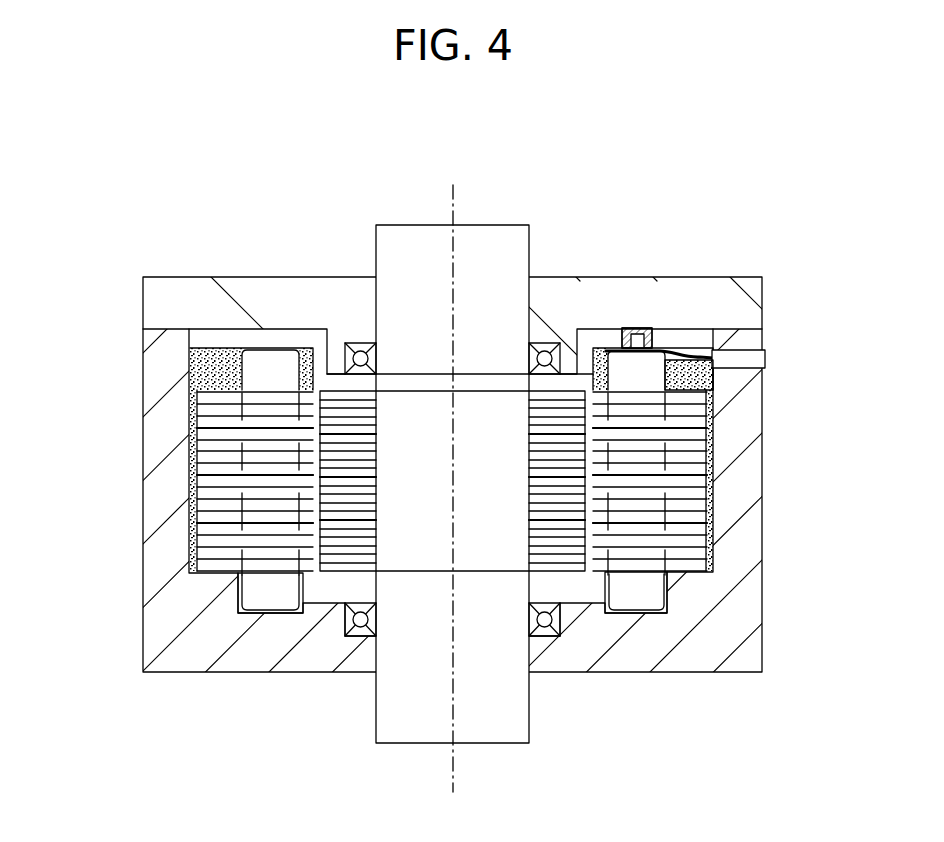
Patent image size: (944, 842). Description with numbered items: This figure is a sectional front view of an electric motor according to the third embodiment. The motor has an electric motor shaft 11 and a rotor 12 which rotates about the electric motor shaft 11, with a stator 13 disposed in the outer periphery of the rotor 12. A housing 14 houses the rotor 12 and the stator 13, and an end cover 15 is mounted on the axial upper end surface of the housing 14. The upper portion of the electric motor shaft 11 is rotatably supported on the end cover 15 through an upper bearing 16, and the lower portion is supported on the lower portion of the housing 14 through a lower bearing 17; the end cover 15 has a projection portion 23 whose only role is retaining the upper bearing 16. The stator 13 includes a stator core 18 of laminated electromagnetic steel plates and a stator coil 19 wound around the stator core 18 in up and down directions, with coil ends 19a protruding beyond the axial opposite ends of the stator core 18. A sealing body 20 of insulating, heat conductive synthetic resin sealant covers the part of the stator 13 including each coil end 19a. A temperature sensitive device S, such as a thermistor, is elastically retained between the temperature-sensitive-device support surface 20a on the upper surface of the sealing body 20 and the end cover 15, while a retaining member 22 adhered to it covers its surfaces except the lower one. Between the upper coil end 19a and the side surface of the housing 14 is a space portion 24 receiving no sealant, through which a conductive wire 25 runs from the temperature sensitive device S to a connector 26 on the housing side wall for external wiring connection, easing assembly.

The electric motor shaft 11 is at (423, 226).
The rotor 12 is at (570, 545).
The stator 13 is at (368, 473).
The housing 14 is at (764, 531).
The end cover 15 is at (190, 278).
The upper bearing 16 is at (355, 343).
The lower bearing 17 is at (350, 636).
The stator core 18 is at (190, 438).
The stator coil 19 is at (240, 507).
The coil end 19a is at (268, 357).
The sealing body 20 is at (190, 373).
The temperature-sensitive-device support surface 20a is at (610, 350).
The retaining member 22 is at (638, 330).
The projection portion 23 is at (343, 374).
The space portion 24 is at (688, 367).
The conductive wire 25 is at (705, 351).
The connector 26 is at (767, 359).
The temperature sensitive device S is at (637, 351).